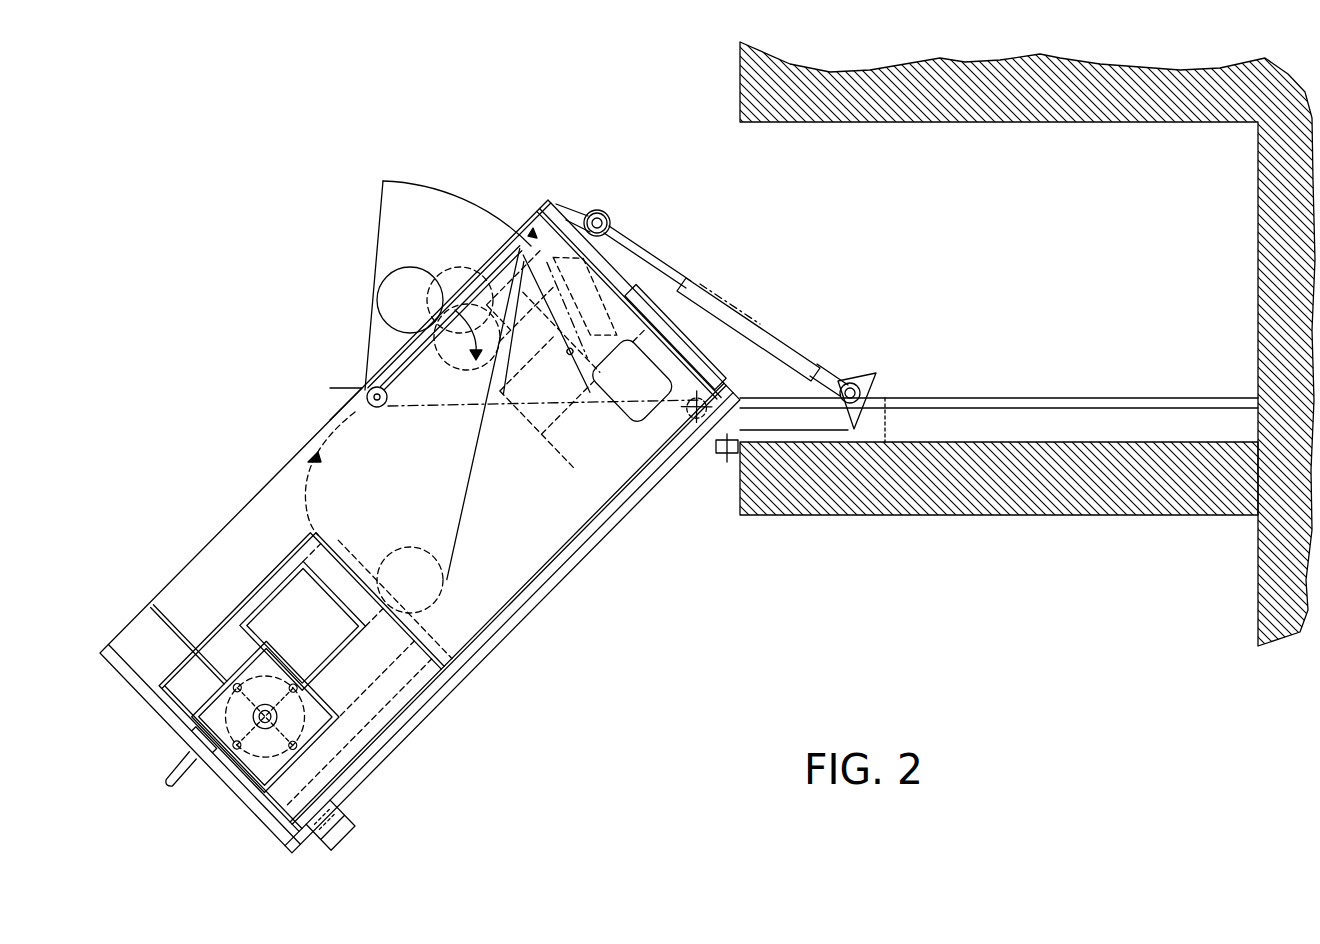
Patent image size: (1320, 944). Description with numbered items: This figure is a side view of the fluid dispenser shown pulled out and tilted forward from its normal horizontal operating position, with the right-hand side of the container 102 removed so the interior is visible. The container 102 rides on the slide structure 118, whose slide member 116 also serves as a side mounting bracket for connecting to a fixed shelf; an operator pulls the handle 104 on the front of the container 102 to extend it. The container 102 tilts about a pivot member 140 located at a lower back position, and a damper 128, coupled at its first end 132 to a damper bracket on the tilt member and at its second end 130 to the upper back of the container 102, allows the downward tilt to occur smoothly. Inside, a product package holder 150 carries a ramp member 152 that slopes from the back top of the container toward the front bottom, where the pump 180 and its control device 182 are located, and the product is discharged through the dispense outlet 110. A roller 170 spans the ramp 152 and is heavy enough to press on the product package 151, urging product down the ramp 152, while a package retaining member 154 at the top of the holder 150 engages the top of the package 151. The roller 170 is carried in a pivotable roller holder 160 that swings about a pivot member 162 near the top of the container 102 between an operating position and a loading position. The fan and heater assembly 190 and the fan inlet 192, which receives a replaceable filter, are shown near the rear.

The container 102 is at (132, 680).
The handle 104 is at (172, 783).
The dispense outlet 110 is at (345, 830).
The slide member 116 is at (1166, 437).
The slide structure 118 is at (1202, 398).
The damper 128 is at (712, 290).
The second end 130 is at (608, 218).
The first end 132 is at (860, 378).
The pivot member 140 is at (697, 410).
The product package holder 150 is at (280, 500).
The product package 151 is at (308, 462).
The ramp member 152 is at (473, 466).
The package retaining member 154 is at (596, 212).
The roller holder 160 is at (380, 218).
The pivot member 162 is at (367, 392).
The roller 170 is at (400, 283).
The pump 180 is at (265, 757).
The control device 182 is at (329, 634).
The fan and heater assembly 190 is at (595, 480).
The fan inlet 192 is at (722, 352).